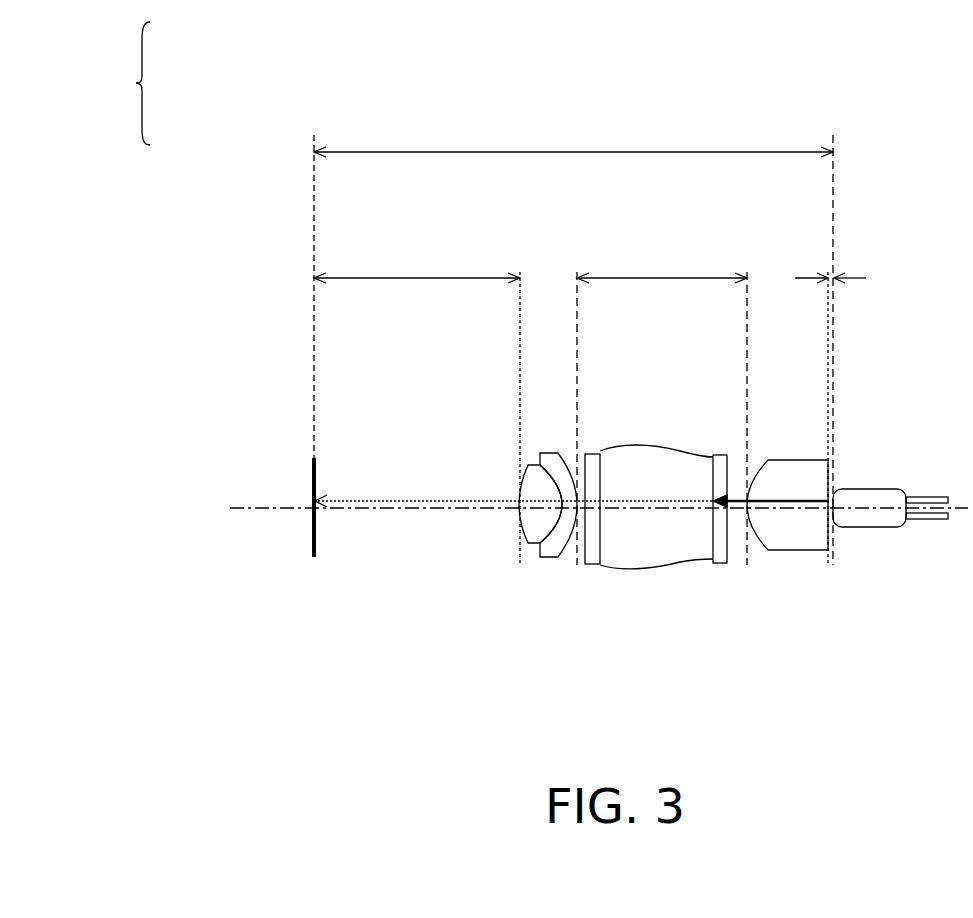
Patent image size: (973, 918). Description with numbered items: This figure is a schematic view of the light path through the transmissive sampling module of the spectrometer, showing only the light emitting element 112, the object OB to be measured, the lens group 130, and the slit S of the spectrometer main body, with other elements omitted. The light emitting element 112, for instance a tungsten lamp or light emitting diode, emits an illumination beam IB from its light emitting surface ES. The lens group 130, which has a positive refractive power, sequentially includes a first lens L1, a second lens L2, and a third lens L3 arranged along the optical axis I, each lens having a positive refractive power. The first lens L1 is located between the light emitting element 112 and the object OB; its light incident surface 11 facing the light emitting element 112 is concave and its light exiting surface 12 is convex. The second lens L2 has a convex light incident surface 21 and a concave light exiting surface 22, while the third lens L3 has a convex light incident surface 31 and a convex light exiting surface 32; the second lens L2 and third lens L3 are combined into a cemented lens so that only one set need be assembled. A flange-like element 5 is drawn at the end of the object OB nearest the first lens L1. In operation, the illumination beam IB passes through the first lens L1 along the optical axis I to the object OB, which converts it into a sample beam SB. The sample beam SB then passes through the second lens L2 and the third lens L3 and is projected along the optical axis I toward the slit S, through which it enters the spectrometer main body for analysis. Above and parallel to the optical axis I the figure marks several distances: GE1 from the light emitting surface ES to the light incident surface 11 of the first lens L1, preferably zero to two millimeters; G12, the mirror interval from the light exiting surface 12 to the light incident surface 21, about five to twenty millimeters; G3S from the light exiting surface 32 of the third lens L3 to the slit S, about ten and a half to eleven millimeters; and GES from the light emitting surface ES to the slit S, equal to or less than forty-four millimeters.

The lens group 130 is at (137, 87).
The first lens L1 is at (803, 460).
The second lens L2 is at (548, 453).
The third lens L3 is at (535, 468).
The slit S is at (316, 477).
The sample beam SB is at (442, 501).
The optical axis I is at (245, 507).
The object to be measured OB is at (641, 460).
The objective end element 5 is at (720, 458).
The illumination beam IB is at (782, 500).
The light emitting element 112 is at (872, 489).
The light exiting surface 12 is at (752, 535).
The light incident surface 11 is at (830, 540).
The light emitting surface ES is at (831, 535).
The light exiting surface 32 is at (523, 534).
The light incident surface 31 is at (545, 545).
The light exiting surface 22 is at (541, 537).
The light incident surface 21 is at (570, 548).
The distance from light emitting surface to slit GES is at (573, 134).
The distance from third lens to slit G3S is at (417, 262).
The mirror interval G12 is at (662, 262).
The distance from light emitting surface to first lens GE1 is at (830, 278).